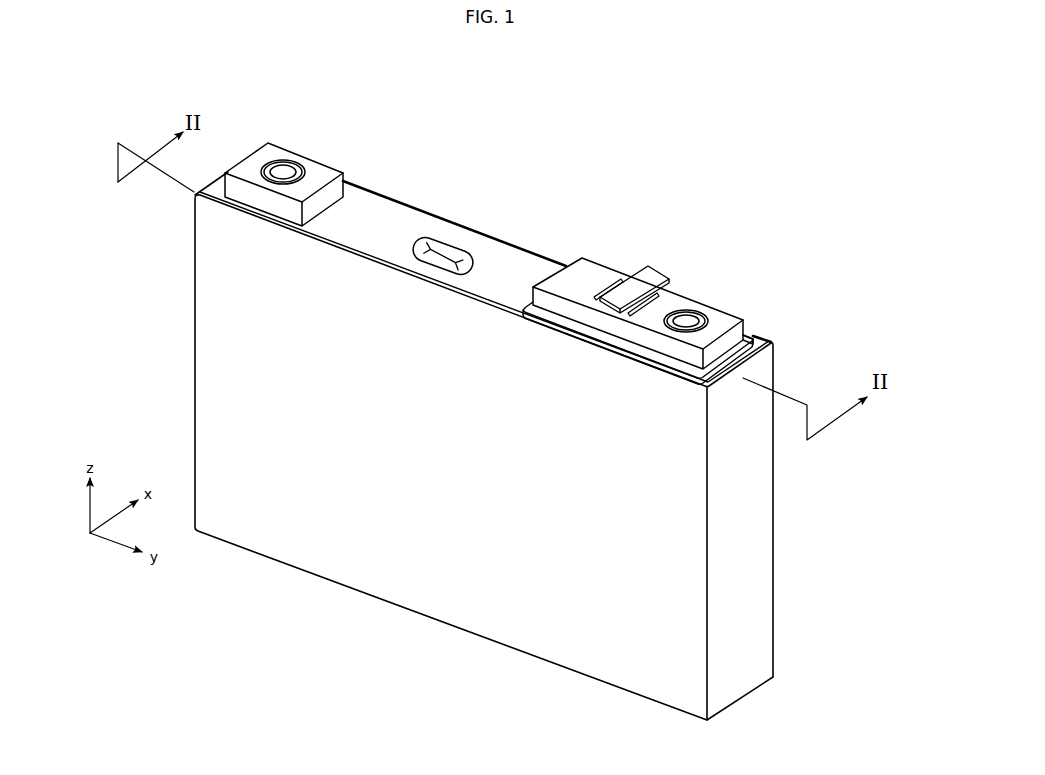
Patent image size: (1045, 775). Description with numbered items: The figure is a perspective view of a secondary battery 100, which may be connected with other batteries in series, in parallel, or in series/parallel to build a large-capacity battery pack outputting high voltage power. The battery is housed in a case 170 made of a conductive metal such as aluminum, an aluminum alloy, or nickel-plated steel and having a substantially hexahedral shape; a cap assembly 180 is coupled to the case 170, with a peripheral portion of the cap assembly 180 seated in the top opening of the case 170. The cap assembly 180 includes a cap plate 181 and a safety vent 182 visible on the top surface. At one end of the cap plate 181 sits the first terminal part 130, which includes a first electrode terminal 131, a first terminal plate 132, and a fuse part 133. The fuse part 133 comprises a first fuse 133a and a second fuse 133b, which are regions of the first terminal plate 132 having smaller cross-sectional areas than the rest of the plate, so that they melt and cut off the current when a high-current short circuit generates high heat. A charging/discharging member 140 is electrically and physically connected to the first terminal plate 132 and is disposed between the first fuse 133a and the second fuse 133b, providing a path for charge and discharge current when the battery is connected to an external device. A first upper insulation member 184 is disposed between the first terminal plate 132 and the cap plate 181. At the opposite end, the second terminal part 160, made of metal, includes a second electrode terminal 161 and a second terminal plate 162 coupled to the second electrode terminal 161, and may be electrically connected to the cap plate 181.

The secondary battery 100 is at (848, 190).
The first terminal part 130 is at (773, 229).
The first electrode terminal 131 is at (688, 320).
The first terminal plate 132 is at (723, 322).
The fuse part 133 is at (587, 223).
The first fuse 133a is at (597, 296).
The second fuse 133b is at (647, 273).
The charging/discharging member 140 is at (612, 302).
The second terminal part 160 is at (268, 103).
The second electrode terminal 161 is at (281, 167).
The second terminal plate 162 is at (323, 173).
The case 170 is at (746, 542).
The cap assembly 180 is at (533, 270).
The cap plate 181 is at (402, 223).
The safety vent 182 is at (455, 242).
The first upper insulation member 184 is at (752, 337).